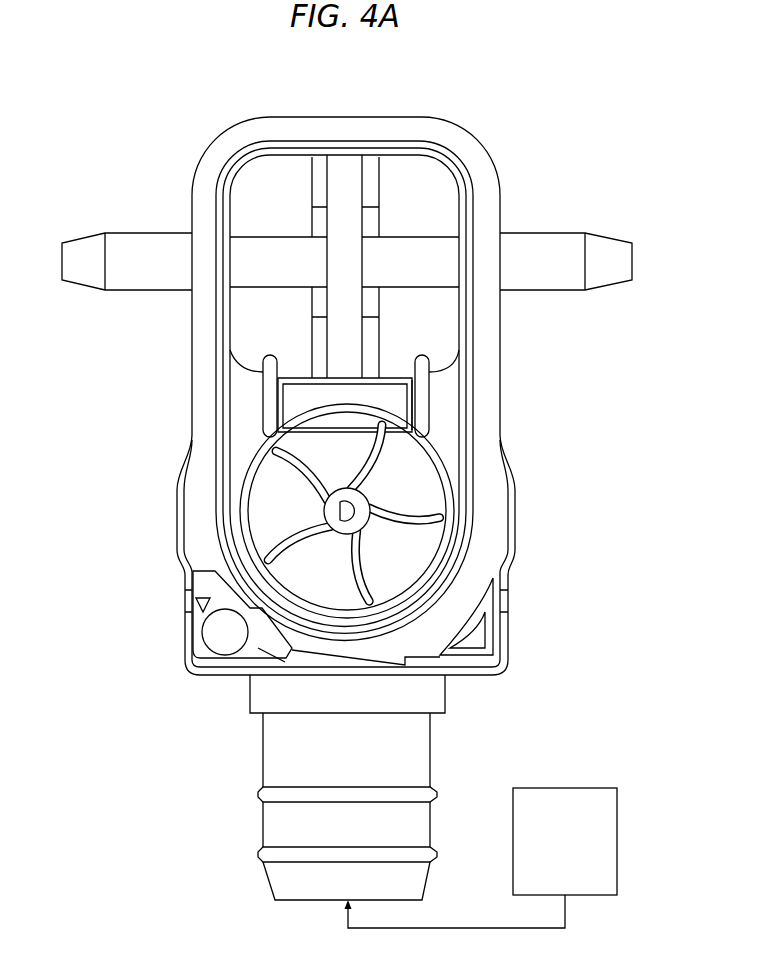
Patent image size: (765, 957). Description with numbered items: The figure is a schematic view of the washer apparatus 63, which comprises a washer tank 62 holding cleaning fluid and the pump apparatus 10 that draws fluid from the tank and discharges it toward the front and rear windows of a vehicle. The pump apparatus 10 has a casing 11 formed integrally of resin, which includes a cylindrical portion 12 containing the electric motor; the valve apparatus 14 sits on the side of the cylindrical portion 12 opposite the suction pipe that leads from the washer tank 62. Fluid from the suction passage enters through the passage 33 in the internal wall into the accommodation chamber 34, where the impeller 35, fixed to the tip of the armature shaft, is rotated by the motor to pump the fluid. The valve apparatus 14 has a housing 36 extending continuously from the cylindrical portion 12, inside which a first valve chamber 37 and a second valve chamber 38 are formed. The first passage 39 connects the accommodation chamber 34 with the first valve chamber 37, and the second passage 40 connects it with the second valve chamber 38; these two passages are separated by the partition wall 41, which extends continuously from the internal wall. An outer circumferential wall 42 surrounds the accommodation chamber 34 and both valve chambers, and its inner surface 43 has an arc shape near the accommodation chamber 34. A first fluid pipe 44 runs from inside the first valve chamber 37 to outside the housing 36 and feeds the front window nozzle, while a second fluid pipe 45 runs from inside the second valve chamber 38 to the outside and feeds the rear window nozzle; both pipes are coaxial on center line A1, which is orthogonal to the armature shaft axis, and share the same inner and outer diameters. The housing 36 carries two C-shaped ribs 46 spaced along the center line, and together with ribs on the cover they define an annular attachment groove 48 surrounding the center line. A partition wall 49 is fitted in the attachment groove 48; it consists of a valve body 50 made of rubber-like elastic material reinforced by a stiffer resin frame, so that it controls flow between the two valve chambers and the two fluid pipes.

The pump apparatus 10 is at (133, 662).
The casing 11 is at (168, 382).
The cylindrical portion 12 is at (180, 478).
The valve apparatus 14 is at (506, 210).
The passage 33 is at (322, 512).
The accommodation chamber 34 is at (420, 543).
The impeller 35 is at (430, 483).
The housing 36 is at (212, 165).
The first valve chamber 37 is at (264, 165).
The second valve chamber 38 is at (420, 167).
The first passage 39 is at (262, 428).
The second passage 40 is at (443, 428).
The partition wall 41 is at (432, 402).
The outer circumferential wall 42 is at (381, 140).
The inner surface 43 is at (447, 508).
The first fluid pipe 44 is at (137, 250).
The second fluid pipe 45 is at (560, 255).
The ribs 46 is at (260, 360).
The attachment groove 48 is at (347, 375).
The partition wall 49 is at (309, 216).
The valve body 50 is at (340, 163).
The washer tank 62 is at (565, 795).
The washer apparatus 63 is at (182, 805).